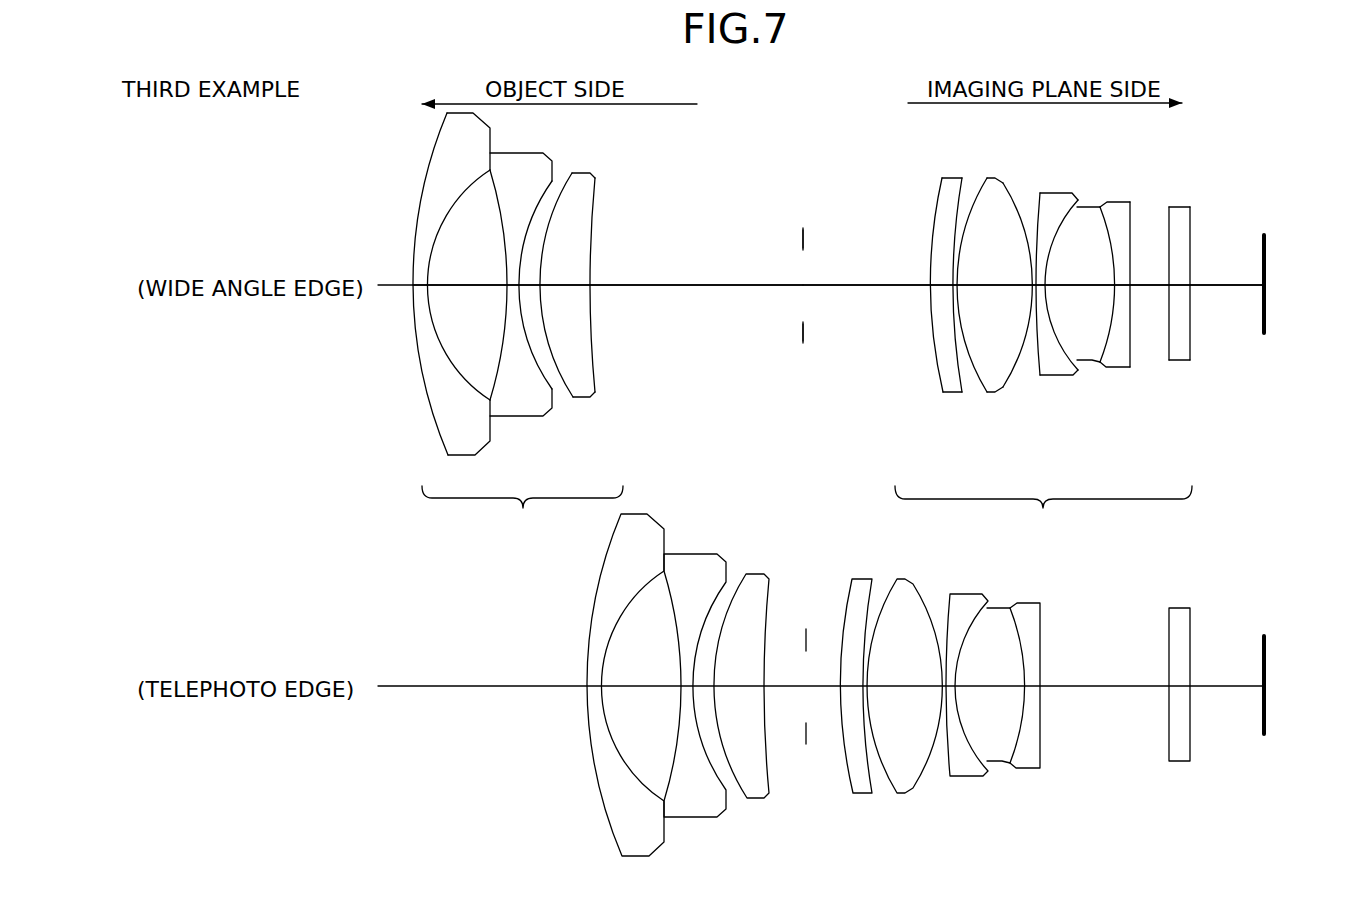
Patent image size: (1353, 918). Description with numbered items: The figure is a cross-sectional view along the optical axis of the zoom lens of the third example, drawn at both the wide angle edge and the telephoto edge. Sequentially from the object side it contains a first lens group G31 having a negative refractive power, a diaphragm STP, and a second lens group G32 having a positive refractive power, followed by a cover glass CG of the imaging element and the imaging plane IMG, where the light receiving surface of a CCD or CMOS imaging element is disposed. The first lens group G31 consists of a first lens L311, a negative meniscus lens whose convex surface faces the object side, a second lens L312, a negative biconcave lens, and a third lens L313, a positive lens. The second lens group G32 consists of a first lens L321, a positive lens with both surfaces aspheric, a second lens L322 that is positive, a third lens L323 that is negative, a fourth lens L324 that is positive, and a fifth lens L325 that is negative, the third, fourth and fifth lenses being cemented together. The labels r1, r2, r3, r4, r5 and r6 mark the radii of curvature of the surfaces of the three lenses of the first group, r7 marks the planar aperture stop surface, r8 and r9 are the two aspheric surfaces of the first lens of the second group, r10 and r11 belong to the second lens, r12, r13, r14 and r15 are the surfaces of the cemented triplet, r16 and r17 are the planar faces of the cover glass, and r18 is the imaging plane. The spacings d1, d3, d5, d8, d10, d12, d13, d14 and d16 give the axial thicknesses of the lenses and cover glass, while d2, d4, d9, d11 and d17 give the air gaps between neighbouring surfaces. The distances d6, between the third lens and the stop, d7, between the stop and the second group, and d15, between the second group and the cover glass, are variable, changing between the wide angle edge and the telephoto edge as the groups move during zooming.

The radius of curvature r1 is at (415, 247).
The radius of curvature r2 is at (440, 218).
The radius of curvature r3 is at (505, 257).
The radius of curvature r4 is at (527, 227).
The radius of curvature r5 is at (563, 177).
The radius of curvature r6 is at (590, 232).
The aperture stop surface r7 is at (803, 235).
The aspheric surface r8 is at (931, 257).
The aspheric surface r9 is at (955, 230).
The radius of curvature r10 is at (977, 203).
The radius of curvature r11 is at (996, 178).
The radius of curvature r12 is at (1039, 205).
The radius of curvature r13 is at (1072, 200).
The radius of curvature r14 is at (1107, 220).
The radius of curvature r15 is at (1132, 223).
The radius of curvature r16 is at (1170, 260).
The radius of curvature r17 is at (1190, 228).
The imaging plane surface r18 is at (1262, 240).
The lens thickness d1 is at (421, 286).
The distance between surfaces d2 is at (467, 286).
The lens thickness d3 is at (512, 286).
The distance between surfaces d4 is at (567, 288).
The lens thickness d5 is at (530, 286).
The distance between surfaces d6 is at (702, 285).
The distance between surfaces d7 is at (845, 285).
The lens thickness d8 is at (947, 285).
The distance between surfaces d9 is at (955, 285).
The lens thickness d10 is at (995, 285).
The distance between surfaces d11 is at (1033, 285).
The lens thickness d12 is at (1037, 285).
The lens thickness d13 is at (1080, 285).
The lens thickness d14 is at (1127, 285).
The distance between surfaces d15 is at (1147, 285).
The cover glass thickness d16 is at (1177, 285).
The distance between surfaces d17 is at (1240, 285).
The first lens L311 is at (425, 303).
The second lens L312 is at (506, 323).
The third lens L313 is at (590, 309).
The first lens L321 is at (922, 336).
The second lens L322 is at (966, 309).
The third lens L323 is at (1058, 321).
The fourth lens L324 is at (1099, 309).
The fifth lens L325 is at (1138, 328).
The first lens group G31 is at (500, 334).
The second lens group G32 is at (1037, 338).
The diaphragm STP is at (823, 208).
The cover glass CG is at (1209, 270).
The imaging plane IMG is at (1296, 268).